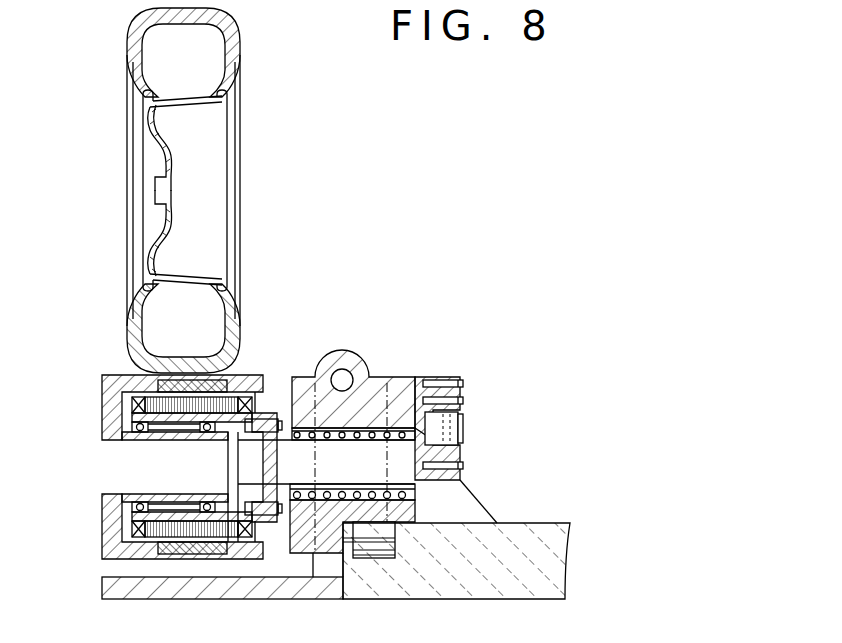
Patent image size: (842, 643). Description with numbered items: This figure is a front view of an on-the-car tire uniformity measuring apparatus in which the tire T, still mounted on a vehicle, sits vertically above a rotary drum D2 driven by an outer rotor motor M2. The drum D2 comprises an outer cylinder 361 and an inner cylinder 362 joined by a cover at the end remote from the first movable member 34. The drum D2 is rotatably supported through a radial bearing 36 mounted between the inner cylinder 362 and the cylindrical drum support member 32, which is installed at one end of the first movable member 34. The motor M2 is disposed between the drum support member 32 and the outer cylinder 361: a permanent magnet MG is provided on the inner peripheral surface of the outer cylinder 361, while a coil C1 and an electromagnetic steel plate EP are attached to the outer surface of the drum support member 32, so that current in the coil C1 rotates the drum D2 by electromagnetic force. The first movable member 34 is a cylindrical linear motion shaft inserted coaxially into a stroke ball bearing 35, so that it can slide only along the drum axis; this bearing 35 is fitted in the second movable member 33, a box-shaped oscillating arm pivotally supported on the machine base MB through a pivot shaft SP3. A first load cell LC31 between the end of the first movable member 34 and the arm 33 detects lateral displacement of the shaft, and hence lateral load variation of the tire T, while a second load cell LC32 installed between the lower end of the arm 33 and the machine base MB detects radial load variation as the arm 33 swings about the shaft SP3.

The tire T is at (240, 41).
The outer cylinder 361 is at (117, 377).
The rotary drum D2 is at (243, 373).
The drum support member 32 is at (259, 412).
The pivot shaft SP3 is at (343, 371).
The first movable member 34 is at (378, 453).
The second movable member 33 is at (414, 386).
The first load cell LC31 is at (453, 430).
The radial bearing 36 is at (135, 439).
The inner cylinder 362 is at (166, 439).
The outer rotor motor M2 is at (100, 512).
The coil C1 is at (132, 528).
The stroke ball bearing 35 is at (413, 495).
The electromagnetic steel plate EP is at (152, 547).
The permanent magnet MG is at (210, 546).
The second load cell LC32 is at (370, 559).
The machine base MB is at (470, 587).